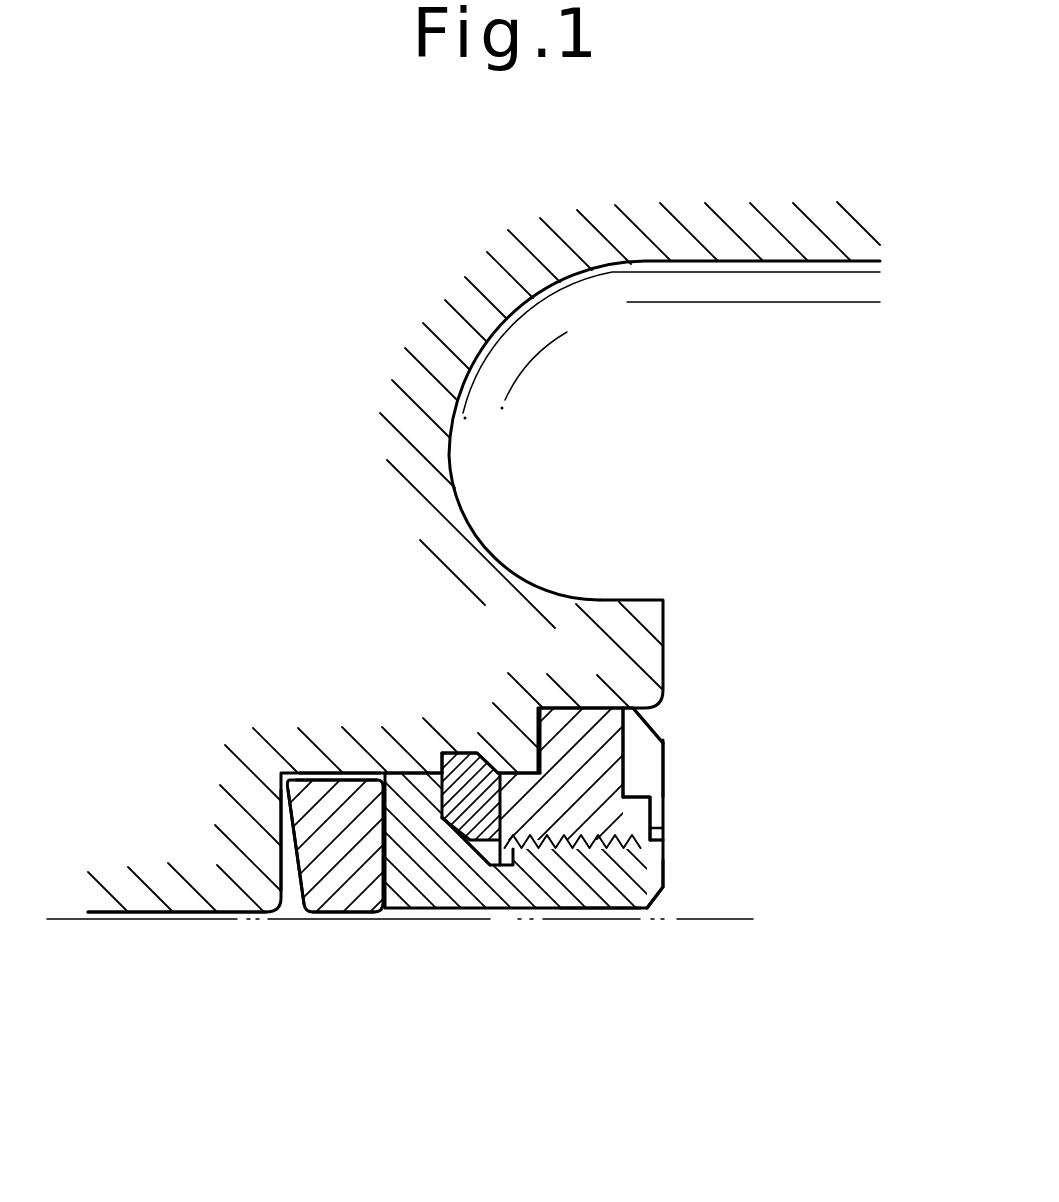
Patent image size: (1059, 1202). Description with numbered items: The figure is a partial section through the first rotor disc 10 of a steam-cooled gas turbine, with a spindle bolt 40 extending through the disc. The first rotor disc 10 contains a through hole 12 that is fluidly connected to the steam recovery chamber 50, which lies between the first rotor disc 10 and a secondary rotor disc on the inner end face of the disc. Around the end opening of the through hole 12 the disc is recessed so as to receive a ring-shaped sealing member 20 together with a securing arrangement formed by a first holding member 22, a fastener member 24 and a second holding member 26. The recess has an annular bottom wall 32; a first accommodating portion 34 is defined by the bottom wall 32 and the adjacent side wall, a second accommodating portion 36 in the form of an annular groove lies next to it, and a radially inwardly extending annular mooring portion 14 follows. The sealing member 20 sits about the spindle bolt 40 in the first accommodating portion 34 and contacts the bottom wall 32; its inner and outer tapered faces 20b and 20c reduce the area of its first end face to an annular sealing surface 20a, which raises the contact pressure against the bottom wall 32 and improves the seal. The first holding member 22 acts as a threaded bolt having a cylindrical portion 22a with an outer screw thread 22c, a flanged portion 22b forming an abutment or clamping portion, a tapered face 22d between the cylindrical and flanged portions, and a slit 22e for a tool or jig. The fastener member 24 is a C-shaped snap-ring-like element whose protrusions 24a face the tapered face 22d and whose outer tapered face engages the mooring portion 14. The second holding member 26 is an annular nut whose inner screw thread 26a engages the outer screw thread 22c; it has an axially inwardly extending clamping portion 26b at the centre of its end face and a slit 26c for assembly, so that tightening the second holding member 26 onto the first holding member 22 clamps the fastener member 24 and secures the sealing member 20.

The first rotor disc 10 is at (606, 203).
The through hole 12 is at (160, 912).
The mooring portion 14 is at (498, 727).
The sealing member 20 is at (337, 862).
The annular sealing surface 20a is at (300, 775).
The inner tapered face 20b is at (284, 872).
The outer tapered face 20c is at (288, 818).
The first holding member 22 is at (517, 894).
The cylindrical portion 22a is at (600, 896).
The flanged portion 22b is at (397, 797).
The outer screw thread 22c is at (655, 834).
The tapered face 22d is at (478, 858).
The slit 22e is at (663, 880).
The fastener member 24 is at (473, 797).
The protrusion 24a is at (513, 772).
The second holding member 26 is at (660, 738).
The inner screw thread 26a is at (622, 823).
The clamping portion 26b is at (583, 766).
The slit 26c is at (648, 760).
The bottom wall 32 is at (282, 880).
The first accommodating portion 34 is at (338, 779).
The second accommodating portion 36 is at (466, 757).
The spindle bolt 40 is at (734, 924).
The steam recovery chamber 50 is at (755, 434).